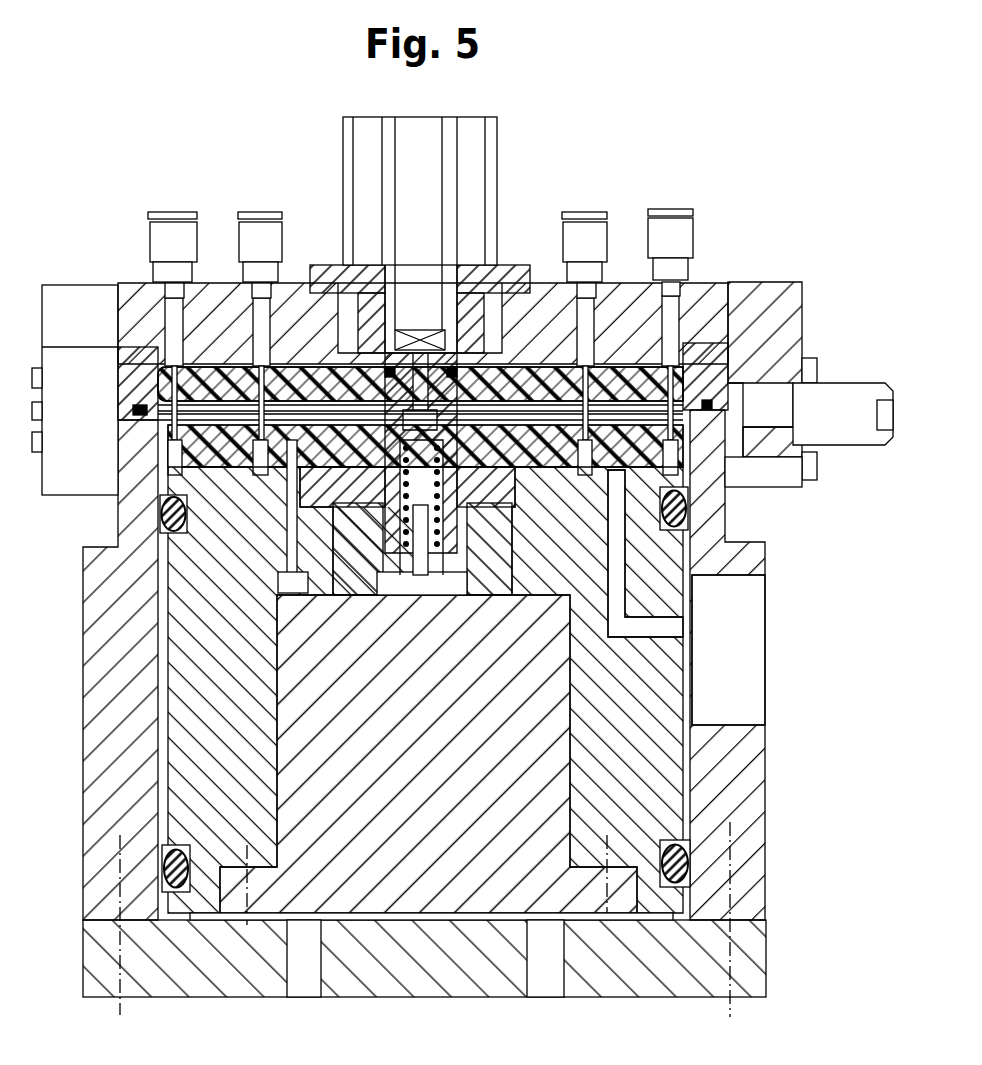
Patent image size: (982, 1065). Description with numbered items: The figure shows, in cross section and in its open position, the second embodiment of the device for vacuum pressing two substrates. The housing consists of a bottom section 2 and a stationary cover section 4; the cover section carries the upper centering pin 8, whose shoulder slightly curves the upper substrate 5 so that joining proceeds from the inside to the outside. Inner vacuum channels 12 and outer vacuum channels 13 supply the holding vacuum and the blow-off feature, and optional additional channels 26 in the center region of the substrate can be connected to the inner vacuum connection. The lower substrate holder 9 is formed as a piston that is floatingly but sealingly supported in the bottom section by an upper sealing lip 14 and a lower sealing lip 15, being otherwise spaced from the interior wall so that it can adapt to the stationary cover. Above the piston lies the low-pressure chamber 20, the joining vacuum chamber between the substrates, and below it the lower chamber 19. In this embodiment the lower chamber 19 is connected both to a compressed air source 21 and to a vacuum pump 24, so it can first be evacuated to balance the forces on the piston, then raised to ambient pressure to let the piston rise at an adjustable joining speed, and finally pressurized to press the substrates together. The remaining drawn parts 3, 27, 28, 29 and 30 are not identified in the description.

The bottom section 2 is at (768, 868).
The piston 3 is at (613, 413).
The cover section 4 is at (767, 283).
The upper substrate 5 is at (643, 367).
The upper centering pin 8 is at (417, 360).
The lower substrate holder 9 is at (672, 797).
The inner vacuum channels 12 is at (347, 377).
The outer vacuum channels 13 is at (153, 372).
The upper sealing lip 14 is at (690, 508).
The lower sealing lip 15 is at (680, 867).
The lower chamber 19 is at (427, 917).
The low-pressure chamber 20 is at (233, 408).
The compressed air source 21 is at (307, 977).
The vacuum pump 24 is at (547, 973).
The additional channels 26 is at (237, 377).
The pneumatic connection 27 is at (168, 233).
The pneumatic connection 28 is at (263, 233).
The groove 29 is at (673, 630).
The opening 30 is at (743, 680).